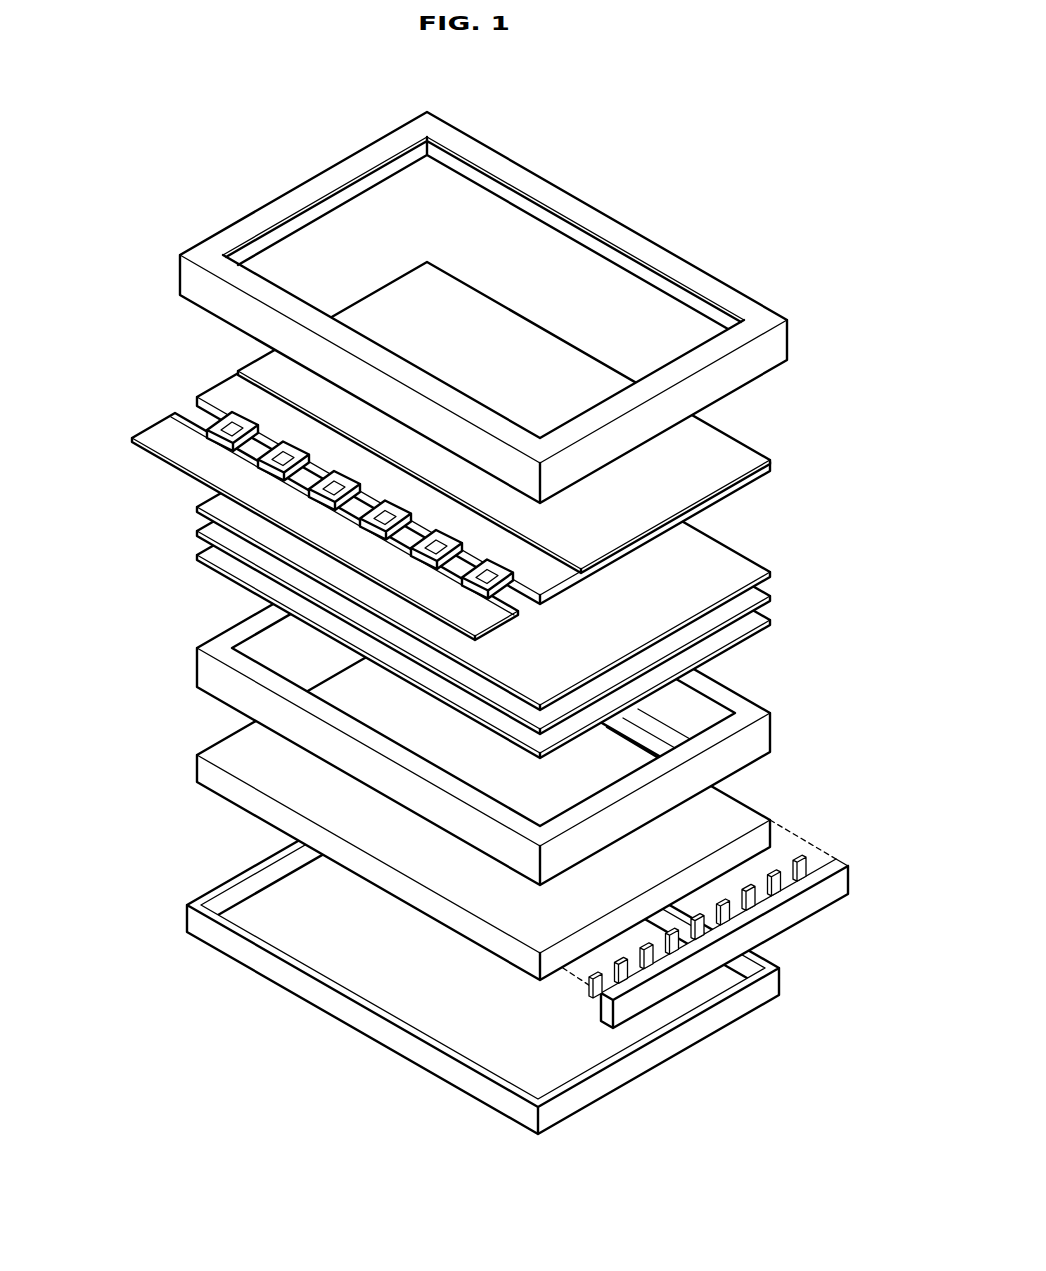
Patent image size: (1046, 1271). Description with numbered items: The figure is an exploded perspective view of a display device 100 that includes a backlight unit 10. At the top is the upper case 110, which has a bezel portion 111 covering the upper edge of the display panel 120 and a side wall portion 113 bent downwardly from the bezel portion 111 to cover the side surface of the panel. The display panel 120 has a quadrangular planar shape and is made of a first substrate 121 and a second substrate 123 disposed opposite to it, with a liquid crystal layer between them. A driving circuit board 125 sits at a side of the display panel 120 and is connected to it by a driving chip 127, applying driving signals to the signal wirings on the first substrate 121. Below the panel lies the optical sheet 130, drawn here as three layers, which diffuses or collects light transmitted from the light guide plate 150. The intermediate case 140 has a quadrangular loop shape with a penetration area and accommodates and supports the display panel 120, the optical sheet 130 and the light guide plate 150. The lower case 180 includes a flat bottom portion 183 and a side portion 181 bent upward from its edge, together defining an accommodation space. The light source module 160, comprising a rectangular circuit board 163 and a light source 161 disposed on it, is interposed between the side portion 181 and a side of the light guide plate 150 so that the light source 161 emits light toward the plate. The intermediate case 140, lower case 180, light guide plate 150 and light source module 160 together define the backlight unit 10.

The display device 100 is at (462, 611).
The backlight unit 10 is at (462, 824).
The upper case 110 is at (420, 307).
The bezel portion 111 is at (217, 236).
The side wall portion 113 is at (213, 300).
The display panel 120 is at (411, 451).
The first substrate 121 is at (223, 395).
The second substrate 123 is at (260, 364).
The driving circuit board 125 is at (220, 463).
The driving chip 127 is at (203, 433).
The optical sheet 130 is at (187, 505).
The intermediate case 140 is at (433, 700).
The light guide plate 150 is at (224, 752).
The light source module 160 is at (732, 891).
The light source 161 is at (800, 860).
The circuit board 163 is at (848, 880).
The lower case 180 is at (438, 950).
The side portion 181 is at (242, 950).
The bottom portion 183 is at (358, 962).